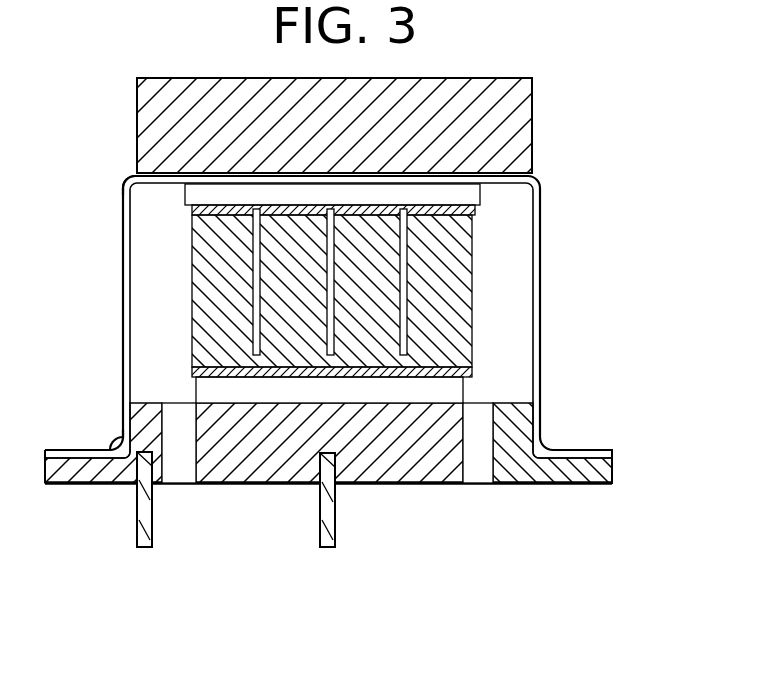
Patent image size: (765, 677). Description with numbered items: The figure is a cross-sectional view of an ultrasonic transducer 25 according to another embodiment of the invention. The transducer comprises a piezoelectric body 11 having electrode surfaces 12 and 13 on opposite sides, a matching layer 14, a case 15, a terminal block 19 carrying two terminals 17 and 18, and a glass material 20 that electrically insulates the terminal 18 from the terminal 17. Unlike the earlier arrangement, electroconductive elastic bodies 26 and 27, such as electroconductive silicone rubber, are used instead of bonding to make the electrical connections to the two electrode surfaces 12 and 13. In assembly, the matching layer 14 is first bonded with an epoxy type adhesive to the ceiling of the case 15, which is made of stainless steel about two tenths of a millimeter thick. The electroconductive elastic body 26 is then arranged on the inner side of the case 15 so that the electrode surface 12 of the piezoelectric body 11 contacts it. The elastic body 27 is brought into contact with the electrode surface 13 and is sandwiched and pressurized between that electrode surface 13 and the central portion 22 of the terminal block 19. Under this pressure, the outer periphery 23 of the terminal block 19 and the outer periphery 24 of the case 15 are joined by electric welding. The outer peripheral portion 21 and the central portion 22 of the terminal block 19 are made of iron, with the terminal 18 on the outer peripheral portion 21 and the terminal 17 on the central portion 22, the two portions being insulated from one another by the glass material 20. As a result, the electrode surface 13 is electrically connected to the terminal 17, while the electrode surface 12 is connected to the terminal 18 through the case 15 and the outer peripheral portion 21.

The piezoelectric body 11 is at (450, 297).
The electrode surface 12 is at (463, 213).
The electrode surface 13 is at (465, 375).
The matching layer 14 is at (522, 135).
The case 15 is at (540, 265).
The terminal 17 is at (326, 549).
The terminal 18 is at (144, 549).
The terminal block 19 is at (613, 472).
The glass material 20 is at (188, 468).
The outer peripheral portion 21 is at (533, 472).
The central portion 22 is at (252, 472).
The outer periphery 23 is at (66, 484).
The outer periphery 24 is at (76, 448).
The ultrasonic transducer 25 is at (124, 180).
The electroconductive elastic body 26 is at (185, 195).
The electroconductive elastic body 27 is at (196, 392).